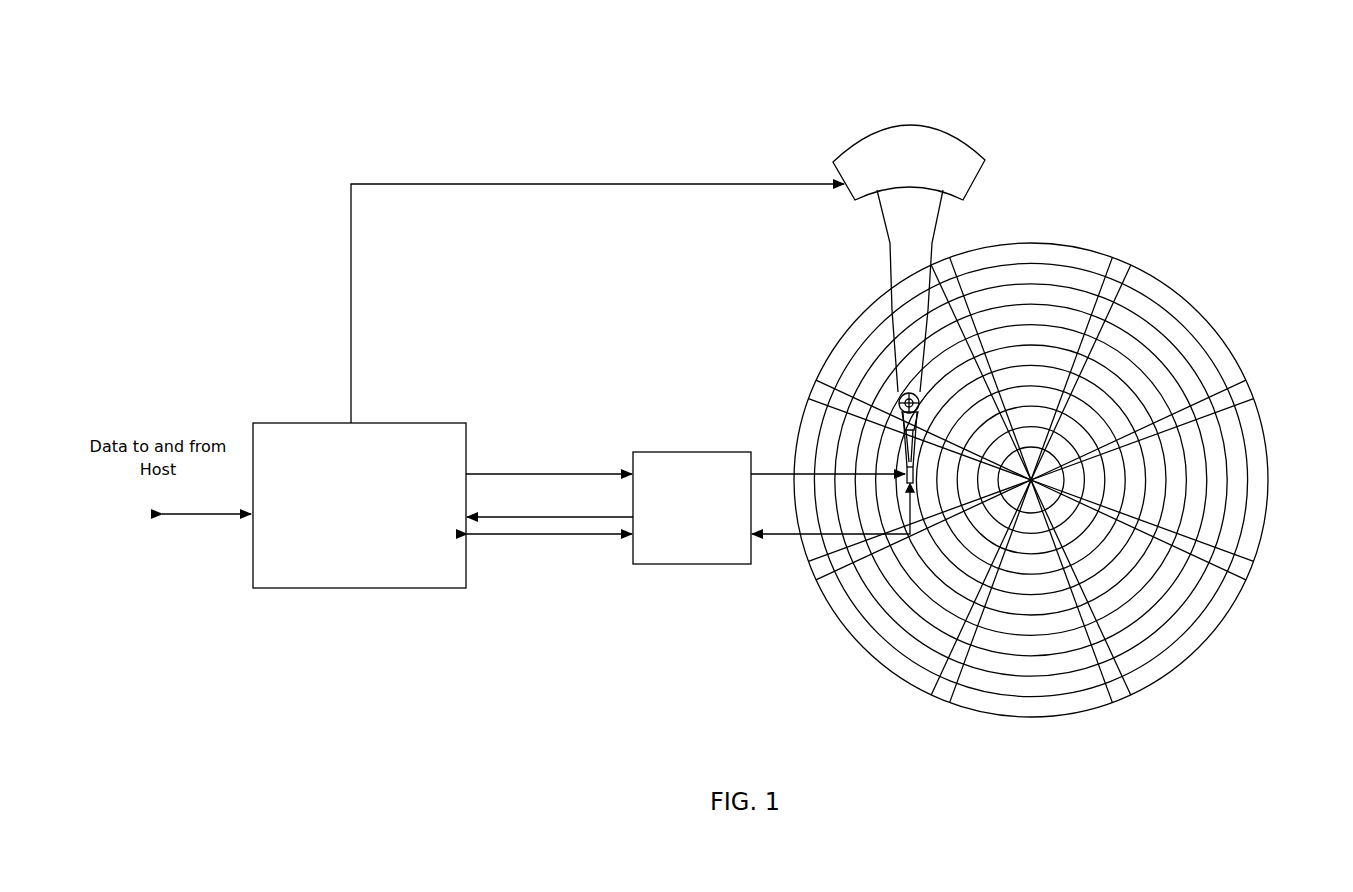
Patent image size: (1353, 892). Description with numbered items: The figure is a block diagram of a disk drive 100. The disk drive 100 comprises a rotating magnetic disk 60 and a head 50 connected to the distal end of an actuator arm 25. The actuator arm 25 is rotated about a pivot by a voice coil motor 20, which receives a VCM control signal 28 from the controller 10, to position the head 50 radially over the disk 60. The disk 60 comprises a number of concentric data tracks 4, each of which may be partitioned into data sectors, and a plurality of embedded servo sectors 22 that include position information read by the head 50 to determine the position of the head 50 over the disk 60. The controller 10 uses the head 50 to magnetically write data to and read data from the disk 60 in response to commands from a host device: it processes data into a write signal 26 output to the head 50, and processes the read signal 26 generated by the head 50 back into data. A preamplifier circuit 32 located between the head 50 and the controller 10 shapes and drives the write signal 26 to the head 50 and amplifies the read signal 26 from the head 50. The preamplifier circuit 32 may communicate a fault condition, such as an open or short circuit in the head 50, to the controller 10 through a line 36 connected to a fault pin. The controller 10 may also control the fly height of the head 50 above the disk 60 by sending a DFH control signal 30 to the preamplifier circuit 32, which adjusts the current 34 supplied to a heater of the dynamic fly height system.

The disk drive 100 is at (1229, 67).
The concentric data tracks 4 is at (1049, 475).
The controller 10 is at (420, 423).
The voice coil motor 20 is at (856, 200).
The embedded servo sectors 22 is at (1049, 486).
The actuator arm 25 is at (892, 275).
The write signal / read signal 26 is at (560, 535).
The VCM control signal 28 is at (351, 312).
The DFH control signal 30 is at (552, 474).
The preamplifier circuit 32 is at (693, 452).
The current 34 is at (772, 474).
The line 36 is at (568, 517).
The head 50 is at (903, 487).
The rotating magnetic disk 60 is at (1197, 298).